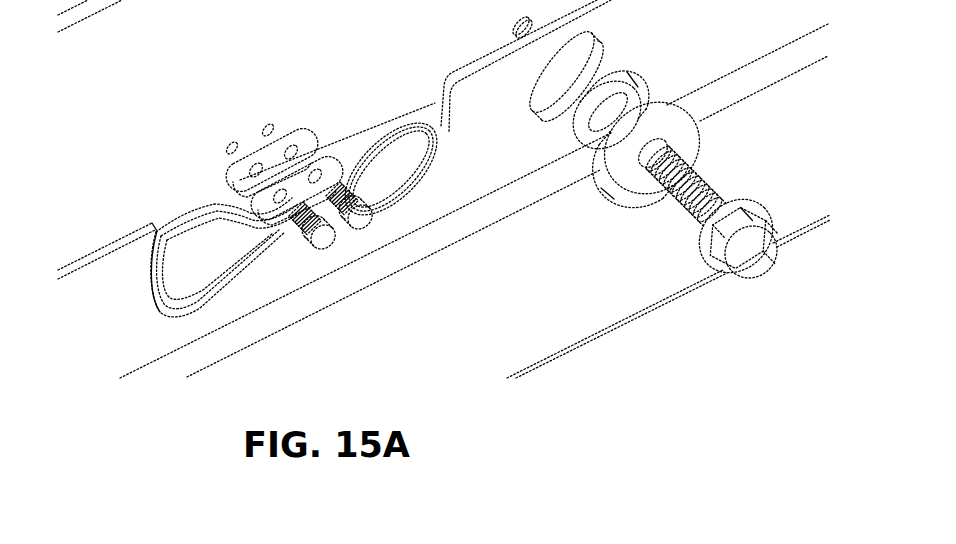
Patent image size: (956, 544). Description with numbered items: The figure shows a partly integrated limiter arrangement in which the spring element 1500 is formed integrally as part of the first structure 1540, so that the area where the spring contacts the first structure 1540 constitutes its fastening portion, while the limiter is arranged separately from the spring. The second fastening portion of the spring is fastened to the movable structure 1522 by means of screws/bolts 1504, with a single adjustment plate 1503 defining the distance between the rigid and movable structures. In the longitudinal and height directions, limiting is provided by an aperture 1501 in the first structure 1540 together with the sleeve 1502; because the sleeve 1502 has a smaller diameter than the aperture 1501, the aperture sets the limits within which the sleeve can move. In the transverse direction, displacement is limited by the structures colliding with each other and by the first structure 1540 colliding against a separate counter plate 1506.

The movable structure 1522 is at (277, 80).
The adjustment plate 1503 is at (273, 163).
The spring element 1500 is at (381, 158).
The first structure 1540 is at (381, 158).
The screws/bolts 1504 is at (717, 257).
The aperture 1501 is at (553, 107).
The sleeve 1502 is at (603, 78).
The counter plate 1506 is at (683, 133).